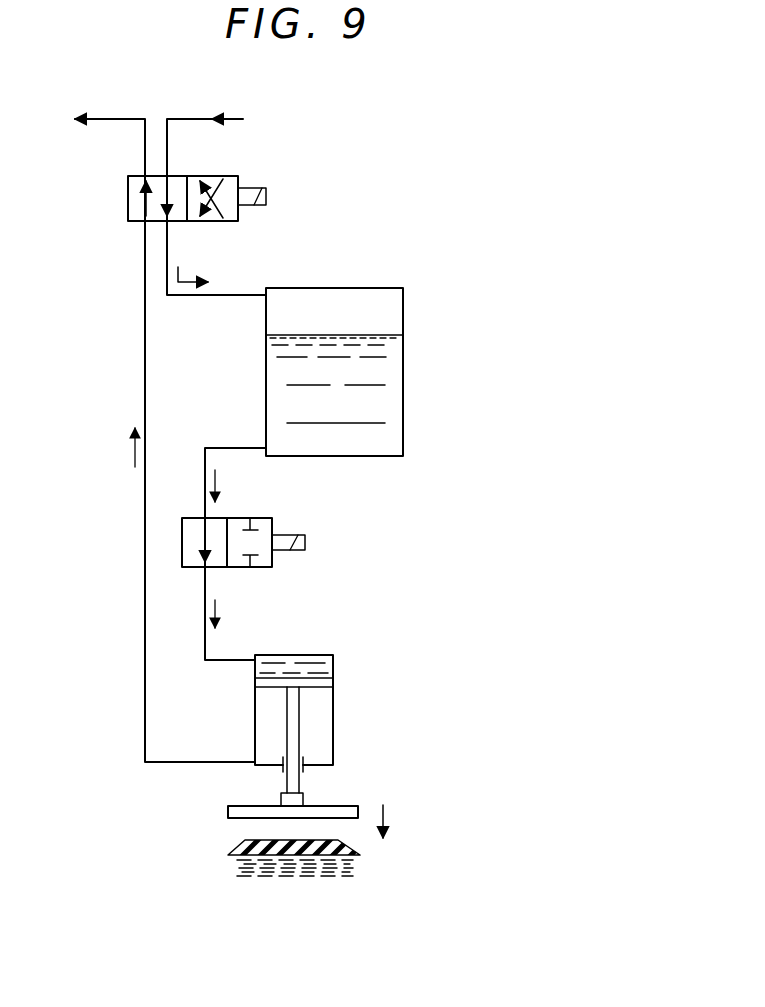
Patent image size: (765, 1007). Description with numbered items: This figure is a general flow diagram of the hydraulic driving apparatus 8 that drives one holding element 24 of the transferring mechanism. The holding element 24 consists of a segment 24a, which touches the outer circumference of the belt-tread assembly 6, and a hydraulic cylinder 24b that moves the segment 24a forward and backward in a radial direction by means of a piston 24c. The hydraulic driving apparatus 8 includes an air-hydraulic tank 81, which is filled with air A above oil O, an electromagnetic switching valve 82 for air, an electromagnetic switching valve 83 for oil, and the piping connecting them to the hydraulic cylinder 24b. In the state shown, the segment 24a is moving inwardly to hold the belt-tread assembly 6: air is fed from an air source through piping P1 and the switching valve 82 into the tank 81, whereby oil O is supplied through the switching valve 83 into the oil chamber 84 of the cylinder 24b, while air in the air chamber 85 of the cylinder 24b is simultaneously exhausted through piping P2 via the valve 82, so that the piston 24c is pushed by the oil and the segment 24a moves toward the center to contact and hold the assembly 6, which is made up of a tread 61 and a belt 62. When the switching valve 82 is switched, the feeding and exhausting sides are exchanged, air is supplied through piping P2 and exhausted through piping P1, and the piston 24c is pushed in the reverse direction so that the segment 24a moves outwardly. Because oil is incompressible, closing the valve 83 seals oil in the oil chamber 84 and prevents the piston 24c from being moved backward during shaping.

The hydraulic driving apparatus 8 is at (279, 432).
The air-hydraulic tank 81 is at (379, 328).
The electromagnetic switching valve for air 82 is at (266, 187).
The electromagnetic switching valve for oil 83 is at (272, 522).
The oil chamber 84 is at (310, 660).
The air chamber 85 is at (312, 745).
The holding element 24 is at (416, 723).
The segment 24a is at (357, 806).
The hydraulic cylinder 24b is at (333, 717).
The piston 24c is at (333, 680).
The belt-tread assembly 6 is at (231, 844).
The tread 61 is at (240, 842).
The belt 62 is at (240, 866).
The air A is at (390, 313).
The oil O is at (393, 430).
The piping p1 P1 is at (215, 297).
The piping p2 P2 is at (145, 285).